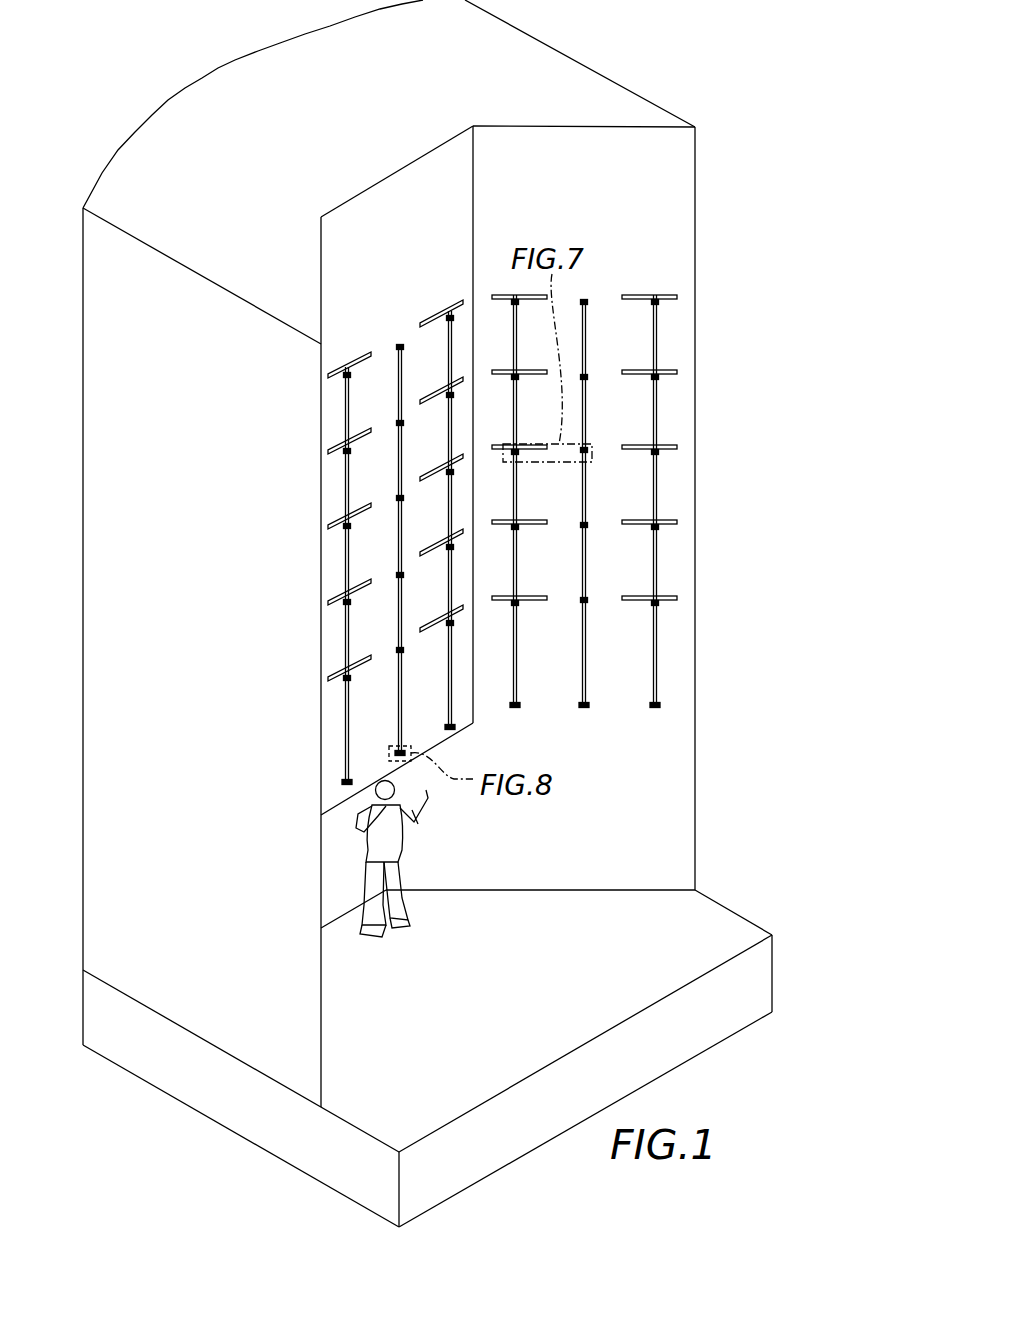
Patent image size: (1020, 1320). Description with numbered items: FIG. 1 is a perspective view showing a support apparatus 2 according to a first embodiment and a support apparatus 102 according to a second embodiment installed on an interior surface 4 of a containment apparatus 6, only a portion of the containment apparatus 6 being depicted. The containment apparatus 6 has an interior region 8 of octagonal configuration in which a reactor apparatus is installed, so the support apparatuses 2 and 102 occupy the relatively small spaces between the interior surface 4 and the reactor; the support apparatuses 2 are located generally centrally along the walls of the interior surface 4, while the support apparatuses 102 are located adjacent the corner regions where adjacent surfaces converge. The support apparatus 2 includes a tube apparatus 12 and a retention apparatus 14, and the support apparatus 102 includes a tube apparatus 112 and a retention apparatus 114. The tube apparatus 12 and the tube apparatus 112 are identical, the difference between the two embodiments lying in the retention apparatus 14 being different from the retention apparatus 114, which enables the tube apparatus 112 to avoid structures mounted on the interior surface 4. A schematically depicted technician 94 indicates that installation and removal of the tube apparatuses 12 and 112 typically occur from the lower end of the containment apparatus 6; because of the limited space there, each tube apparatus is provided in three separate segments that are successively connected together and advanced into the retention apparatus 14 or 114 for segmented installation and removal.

The support apparatus 2 is at (497, 502).
The interior surface 4 is at (427, 172).
The containment apparatus 6 is at (207, 76).
The interior region 8 is at (705, 930).
The tube apparatus 12 is at (592, 332).
The retention apparatus 14 is at (394, 505).
The technician 94 is at (400, 863).
The support apparatus 102 is at (331, 399).
The tube apparatus 112 is at (331, 713).
The retention apparatus 114 is at (327, 534).